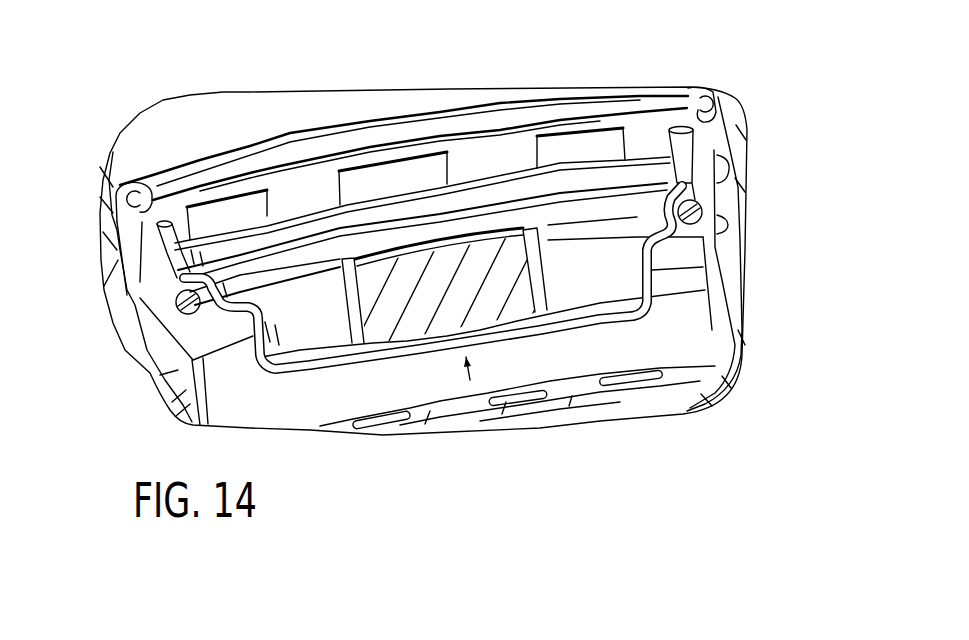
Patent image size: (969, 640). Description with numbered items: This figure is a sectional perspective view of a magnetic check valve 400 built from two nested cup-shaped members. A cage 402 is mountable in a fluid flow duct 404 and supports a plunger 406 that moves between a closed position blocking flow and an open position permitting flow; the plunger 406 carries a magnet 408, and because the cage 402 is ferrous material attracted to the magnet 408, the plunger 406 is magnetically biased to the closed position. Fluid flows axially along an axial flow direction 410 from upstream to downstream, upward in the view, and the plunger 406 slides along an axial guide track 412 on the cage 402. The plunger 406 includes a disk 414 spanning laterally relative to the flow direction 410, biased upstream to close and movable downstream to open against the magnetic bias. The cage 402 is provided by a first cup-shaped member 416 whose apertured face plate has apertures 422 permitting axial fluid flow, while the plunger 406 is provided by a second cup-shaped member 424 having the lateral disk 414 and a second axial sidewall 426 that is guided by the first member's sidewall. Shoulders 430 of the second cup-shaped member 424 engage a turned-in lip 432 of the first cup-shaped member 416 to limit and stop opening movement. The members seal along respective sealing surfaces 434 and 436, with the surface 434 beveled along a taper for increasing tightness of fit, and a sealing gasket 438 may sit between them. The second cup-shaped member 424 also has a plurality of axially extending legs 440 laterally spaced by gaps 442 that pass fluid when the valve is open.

The magnetic check valve 400 is at (80, 272).
The cage 402 is at (192, 390).
The fluid flow duct 404 is at (113, 152).
The plunger 406 is at (568, 318).
The magnet 408 is at (475, 320).
The axial flow direction 410 is at (535, 438).
The axial guide track 412 is at (723, 158).
The disk 414 is at (347, 362).
The first cup-shaped member 416 is at (727, 371).
The apertures 422 is at (633, 387).
The second cup-shaped member 424 is at (650, 302).
The second axial sidewall 426 is at (643, 267).
The shoulders 430 is at (397, 157).
The turned-in lip 432 is at (650, 110).
The sealing surface 434 is at (720, 222).
The sealing surface 436 is at (742, 235).
The sealing gasket 438 is at (733, 196).
The axially extending legs 440 is at (223, 213).
The gaps 442 is at (300, 190).